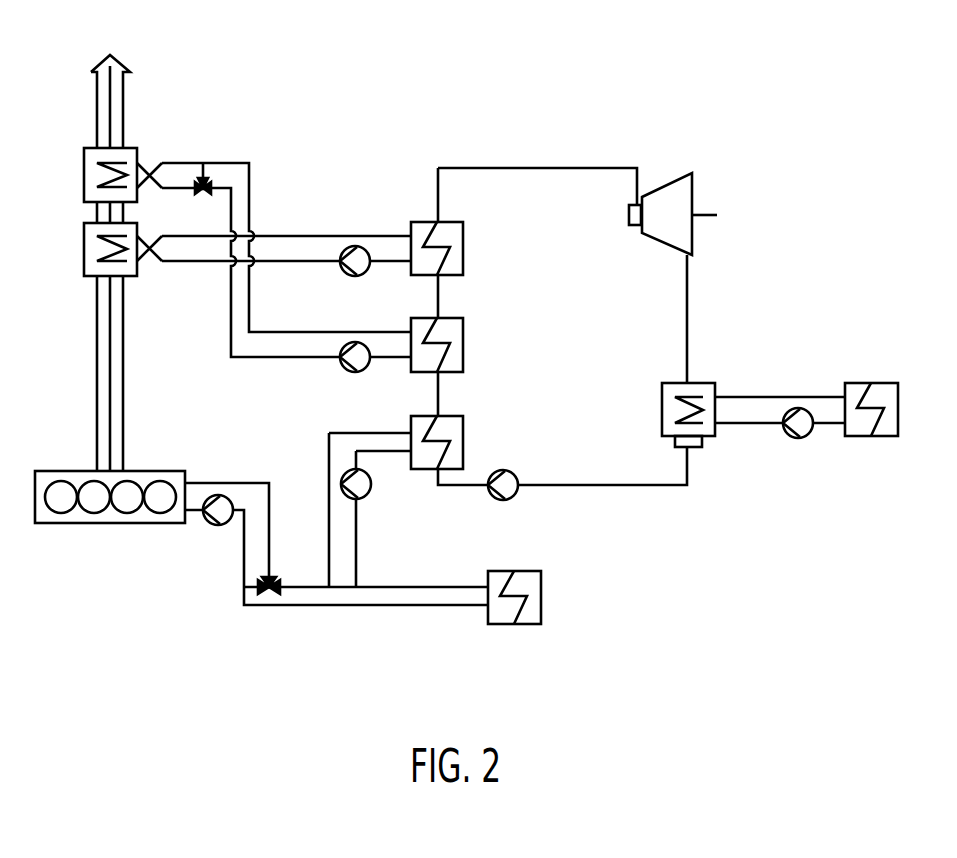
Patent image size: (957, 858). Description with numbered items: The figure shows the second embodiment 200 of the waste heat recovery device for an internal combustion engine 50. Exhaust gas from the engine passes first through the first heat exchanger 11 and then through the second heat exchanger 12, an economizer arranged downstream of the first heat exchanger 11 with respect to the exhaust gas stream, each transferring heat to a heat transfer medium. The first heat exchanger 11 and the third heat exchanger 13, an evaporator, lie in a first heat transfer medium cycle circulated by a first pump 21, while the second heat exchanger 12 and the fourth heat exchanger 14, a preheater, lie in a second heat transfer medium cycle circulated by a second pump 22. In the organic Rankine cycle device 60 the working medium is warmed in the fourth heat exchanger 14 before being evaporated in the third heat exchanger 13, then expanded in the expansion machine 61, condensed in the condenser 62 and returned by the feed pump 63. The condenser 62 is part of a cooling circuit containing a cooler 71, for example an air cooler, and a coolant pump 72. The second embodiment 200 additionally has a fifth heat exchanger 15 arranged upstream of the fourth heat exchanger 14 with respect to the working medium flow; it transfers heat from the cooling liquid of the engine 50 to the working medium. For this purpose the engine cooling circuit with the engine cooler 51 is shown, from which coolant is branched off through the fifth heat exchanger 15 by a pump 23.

The second embodiment 200 is at (566, 80).
The first heat exchanger 11 is at (84, 234).
The second heat exchanger 12 is at (84, 161).
The third heat exchanger 13 is at (463, 236).
The fourth heat exchanger 14 is at (463, 332).
The fifth heat exchanger 15 is at (463, 429).
The first pump 21 is at (346, 272).
The second pump 22 is at (346, 369).
The pump 23 is at (366, 497).
The internal combustion engine 50 is at (160, 525).
The engine cooler 51 is at (541, 584).
The organic Rankine cycle device 60 is at (598, 337).
The expansion machine 61 is at (657, 186).
The condenser 62 is at (708, 382).
The feed pump 63 is at (492, 498).
The cooler 71 is at (854, 382).
The coolant pump 72 is at (788, 436).